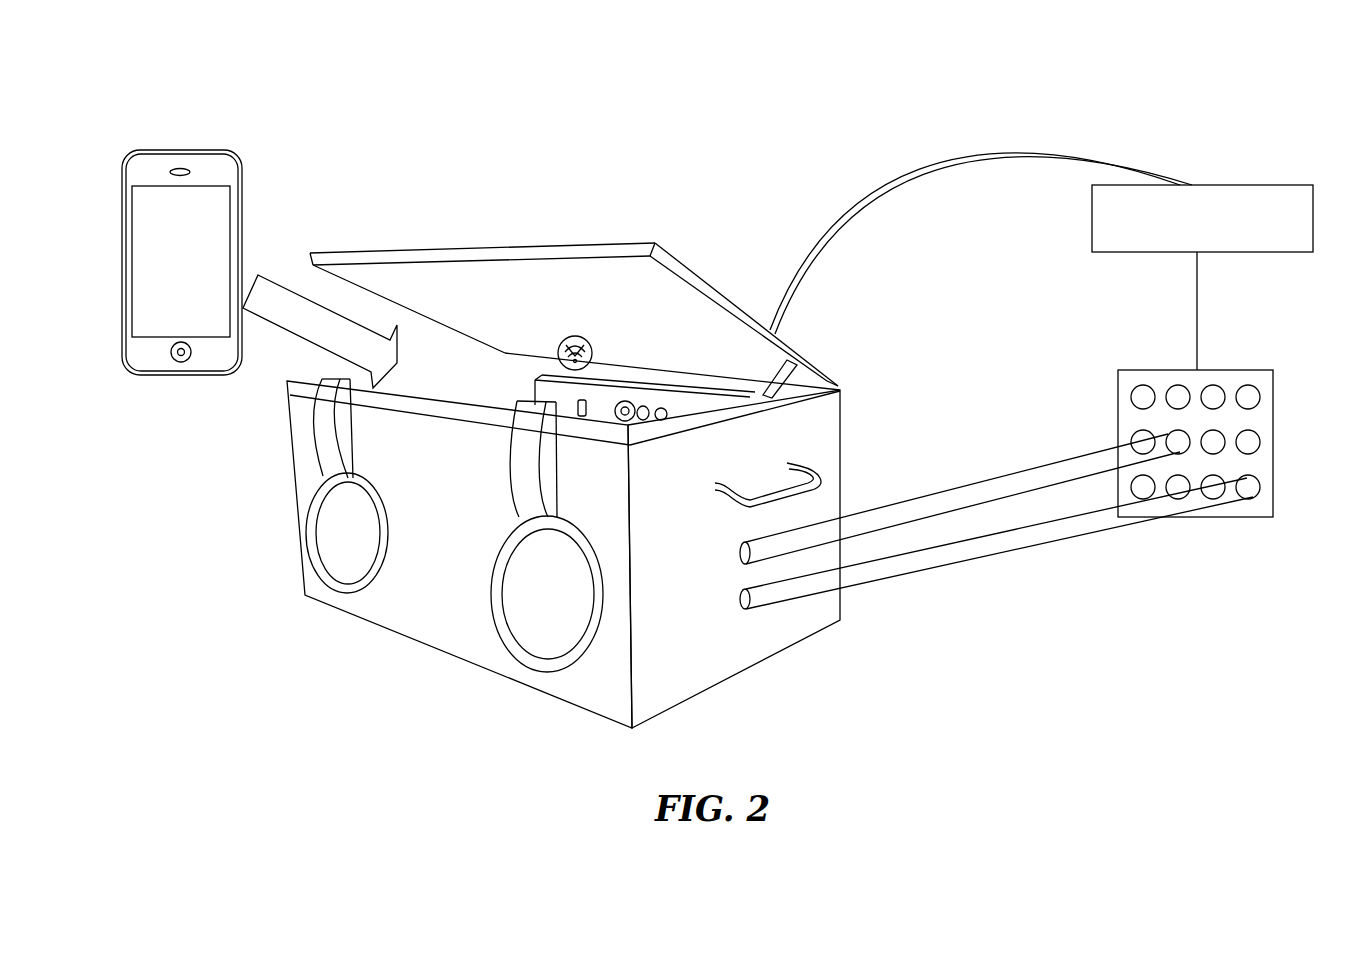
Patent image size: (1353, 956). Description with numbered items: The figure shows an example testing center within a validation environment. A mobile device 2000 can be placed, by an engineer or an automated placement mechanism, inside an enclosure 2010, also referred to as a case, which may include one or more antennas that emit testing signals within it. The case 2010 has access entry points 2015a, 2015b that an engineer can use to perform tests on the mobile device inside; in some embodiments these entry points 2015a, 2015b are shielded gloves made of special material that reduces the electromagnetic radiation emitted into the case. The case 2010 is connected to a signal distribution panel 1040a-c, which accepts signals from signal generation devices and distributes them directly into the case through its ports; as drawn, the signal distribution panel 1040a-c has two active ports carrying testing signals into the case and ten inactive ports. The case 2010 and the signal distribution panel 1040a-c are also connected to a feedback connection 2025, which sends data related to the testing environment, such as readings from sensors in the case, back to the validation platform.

The mobile device 2000 is at (180, 150).
The enclosure 2010 is at (843, 432).
The access entry point 2015a is at (347, 533).
The access entry point 2015b is at (547, 595).
The feedback connection 2025 is at (1027, 154).
The signal distribution panel 1040a-c is at (1303, 249).